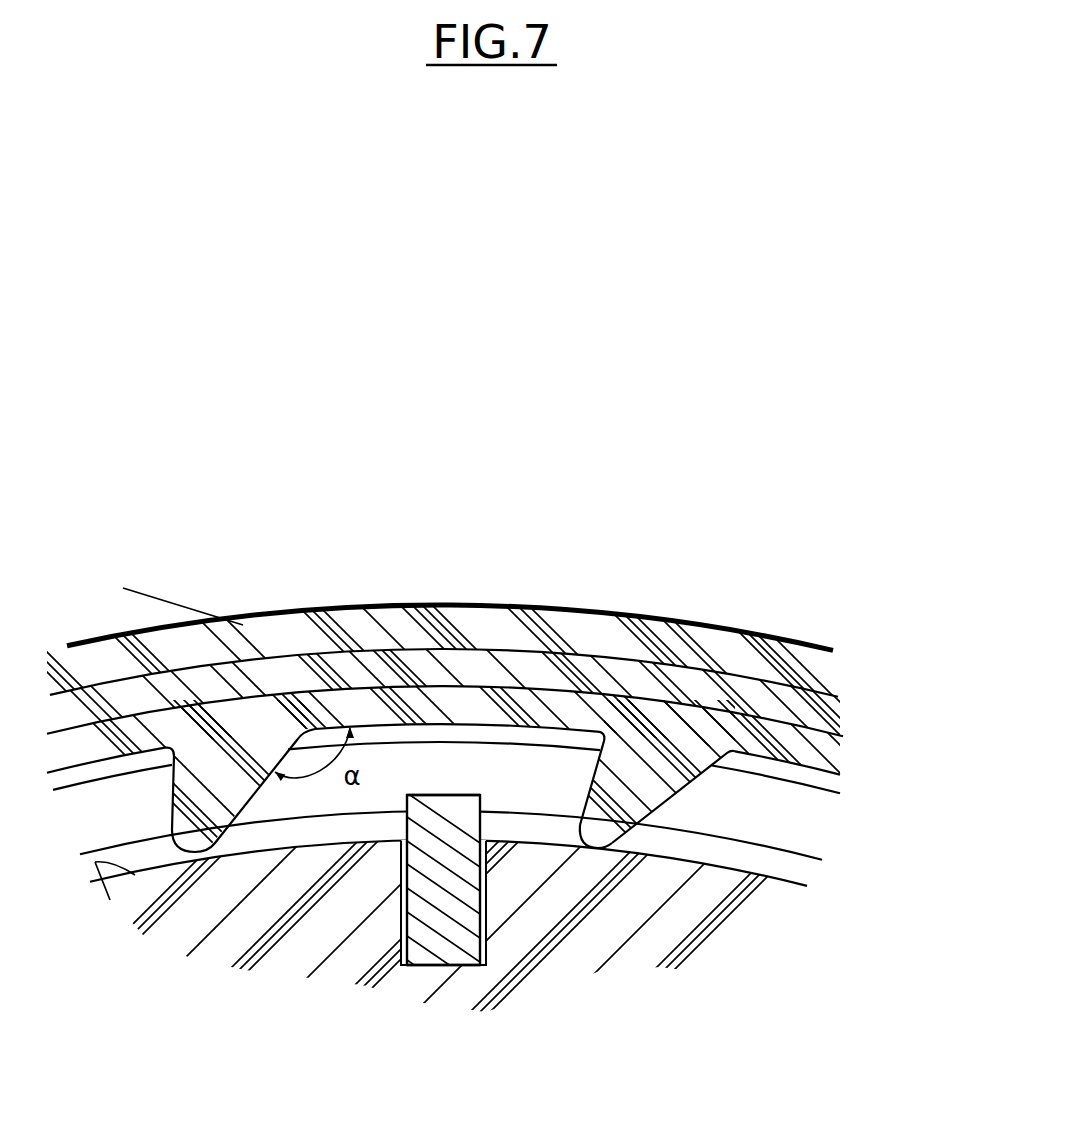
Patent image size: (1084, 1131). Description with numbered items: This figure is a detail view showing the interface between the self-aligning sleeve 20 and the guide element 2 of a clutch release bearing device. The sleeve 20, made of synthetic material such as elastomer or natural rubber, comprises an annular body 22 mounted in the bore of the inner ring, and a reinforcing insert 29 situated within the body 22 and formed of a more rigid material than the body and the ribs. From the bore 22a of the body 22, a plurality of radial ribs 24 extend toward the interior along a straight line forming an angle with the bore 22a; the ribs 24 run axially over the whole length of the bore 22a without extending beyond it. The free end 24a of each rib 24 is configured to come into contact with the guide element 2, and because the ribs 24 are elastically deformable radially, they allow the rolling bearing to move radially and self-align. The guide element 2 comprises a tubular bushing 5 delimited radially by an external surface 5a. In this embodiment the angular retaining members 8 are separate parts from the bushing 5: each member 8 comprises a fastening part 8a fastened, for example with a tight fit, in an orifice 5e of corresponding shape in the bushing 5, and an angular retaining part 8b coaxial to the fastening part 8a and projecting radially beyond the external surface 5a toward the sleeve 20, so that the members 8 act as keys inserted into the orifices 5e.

The guide element 2 is at (774, 988).
The bushing 5 is at (288, 953).
The external surface 5a is at (97, 864).
The orifice 5e is at (480, 922).
The angular retaining member 8 is at (435, 790).
The fastening part 8a is at (437, 945).
The angular retaining part 8b is at (460, 808).
The self-aligning sleeve 20 is at (478, 603).
The annular body 22 is at (268, 632).
The bore 22a is at (812, 771).
The radial rib 24 is at (210, 798).
The free end 24a is at (600, 838).
The reinforcing insert 29 is at (738, 697).